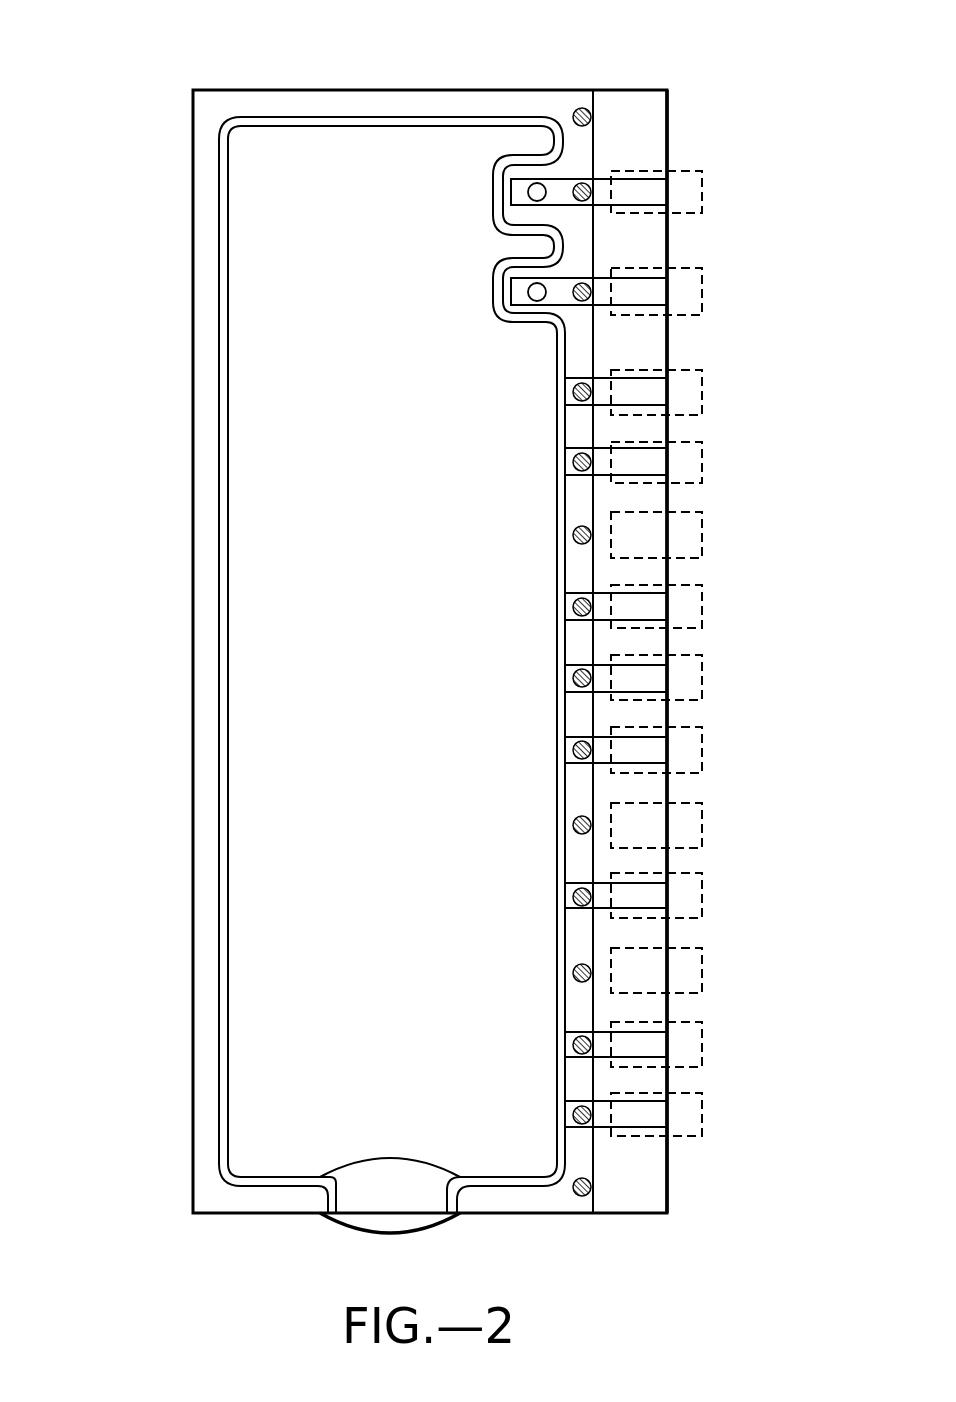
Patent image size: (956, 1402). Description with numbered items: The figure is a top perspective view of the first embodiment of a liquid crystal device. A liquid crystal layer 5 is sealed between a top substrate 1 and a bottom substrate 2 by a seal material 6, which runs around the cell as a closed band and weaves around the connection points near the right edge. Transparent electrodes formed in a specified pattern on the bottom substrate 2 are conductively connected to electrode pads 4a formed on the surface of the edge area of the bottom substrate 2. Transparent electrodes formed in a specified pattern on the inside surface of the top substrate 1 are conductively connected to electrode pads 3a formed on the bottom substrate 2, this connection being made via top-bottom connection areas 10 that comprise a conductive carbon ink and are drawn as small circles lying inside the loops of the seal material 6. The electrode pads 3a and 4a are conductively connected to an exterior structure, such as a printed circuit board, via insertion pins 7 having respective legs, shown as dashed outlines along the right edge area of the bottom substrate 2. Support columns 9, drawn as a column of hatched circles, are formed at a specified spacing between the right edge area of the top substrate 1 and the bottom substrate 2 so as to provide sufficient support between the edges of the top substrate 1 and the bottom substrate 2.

The top substrate 1 is at (340, 90).
The bottom substrate 2 is at (629, 90).
The electrode pads 3a is at (645, 205).
The electrode pads 4a is at (628, 475).
The liquid crystal layer 5 is at (387, 673).
The seal material 6 is at (219, 441).
The insertion pins 7 is at (682, 171).
The support columns 9 is at (577, 110).
The top-bottom connection areas 10 is at (528, 192).